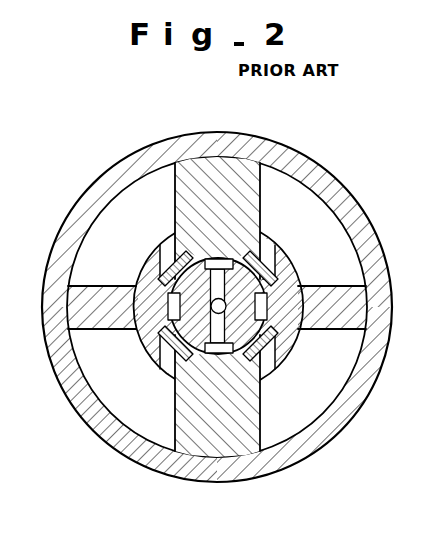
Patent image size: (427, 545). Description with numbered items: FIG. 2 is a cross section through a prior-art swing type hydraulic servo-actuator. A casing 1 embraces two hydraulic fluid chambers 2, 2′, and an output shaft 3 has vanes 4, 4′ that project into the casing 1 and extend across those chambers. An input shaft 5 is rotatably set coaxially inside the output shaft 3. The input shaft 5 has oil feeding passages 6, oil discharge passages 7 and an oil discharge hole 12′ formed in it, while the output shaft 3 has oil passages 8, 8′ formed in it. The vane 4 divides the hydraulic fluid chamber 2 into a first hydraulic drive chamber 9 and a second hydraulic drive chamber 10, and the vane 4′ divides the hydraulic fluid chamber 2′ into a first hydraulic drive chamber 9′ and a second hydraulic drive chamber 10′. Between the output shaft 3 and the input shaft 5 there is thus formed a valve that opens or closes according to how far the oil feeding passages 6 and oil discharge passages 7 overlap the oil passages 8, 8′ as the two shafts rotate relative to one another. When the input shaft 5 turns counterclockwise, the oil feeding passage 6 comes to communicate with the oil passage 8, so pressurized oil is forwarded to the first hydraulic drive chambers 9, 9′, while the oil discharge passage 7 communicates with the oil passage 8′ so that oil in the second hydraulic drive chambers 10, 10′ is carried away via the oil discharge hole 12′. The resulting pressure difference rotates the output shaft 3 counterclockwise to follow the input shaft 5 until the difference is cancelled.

The casing 1 is at (148, 145).
The hydraulic fluid chamber 2 is at (263, 180).
The hydraulic fluid chamber 2′ is at (242, 436).
The output shaft 3 is at (283, 290).
The vane 4 is at (285, 191).
The vane 4′ is at (207, 444).
The input shaft 5 is at (162, 292).
The oil feeding passage 6 is at (172, 304).
The oil discharge passage 7 is at (213, 259).
The oil passage 8 is at (250, 253).
The oil passage 8′ is at (176, 242).
The first hydraulic drive chamber 9 is at (338, 233).
The first hydraulic drive chamber 9′ is at (128, 403).
The second hydraulic drive chamber 10 is at (108, 226).
The second hydraulic drive chamber 10′ is at (335, 375).
The oil discharge hole 12′ is at (270, 272).